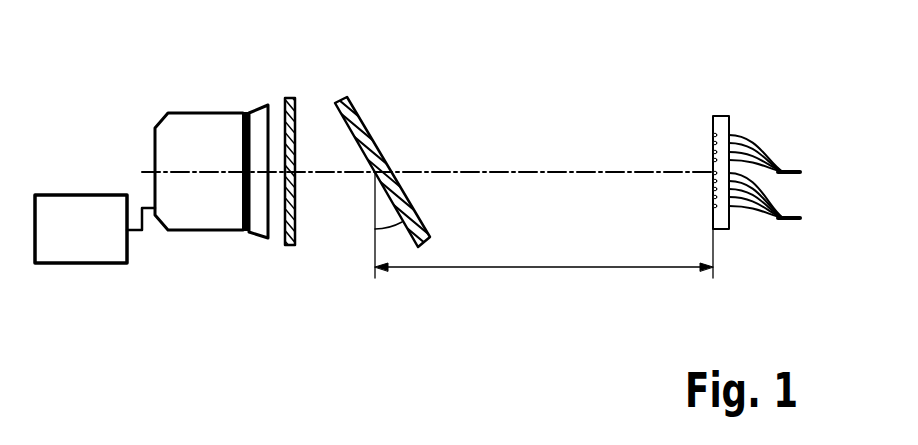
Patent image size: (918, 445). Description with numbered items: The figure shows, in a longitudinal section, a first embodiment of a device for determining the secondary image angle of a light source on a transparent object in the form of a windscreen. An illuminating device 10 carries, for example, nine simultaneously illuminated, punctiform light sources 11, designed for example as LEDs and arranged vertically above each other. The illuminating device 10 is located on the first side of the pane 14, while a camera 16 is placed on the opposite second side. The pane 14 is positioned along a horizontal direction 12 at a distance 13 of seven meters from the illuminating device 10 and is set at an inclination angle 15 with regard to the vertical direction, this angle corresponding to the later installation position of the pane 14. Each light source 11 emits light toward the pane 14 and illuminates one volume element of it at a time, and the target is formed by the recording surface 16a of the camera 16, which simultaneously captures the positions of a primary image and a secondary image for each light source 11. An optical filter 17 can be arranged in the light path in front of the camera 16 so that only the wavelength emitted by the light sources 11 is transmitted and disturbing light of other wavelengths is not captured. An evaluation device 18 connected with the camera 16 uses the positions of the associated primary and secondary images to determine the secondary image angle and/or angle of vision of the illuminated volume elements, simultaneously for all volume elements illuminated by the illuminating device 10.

The illuminating device 10 is at (722, 116).
The light sources 11 is at (778, 185).
The horizontal direction 12 is at (533, 172).
The distance 13 is at (567, 267).
The pane 14 is at (360, 127).
The inclination angle 15 is at (388, 232).
The camera 16 is at (220, 223).
The recording surface 16a is at (268, 210).
The optical filter 17 is at (293, 98).
The evaluation device 18 is at (75, 195).